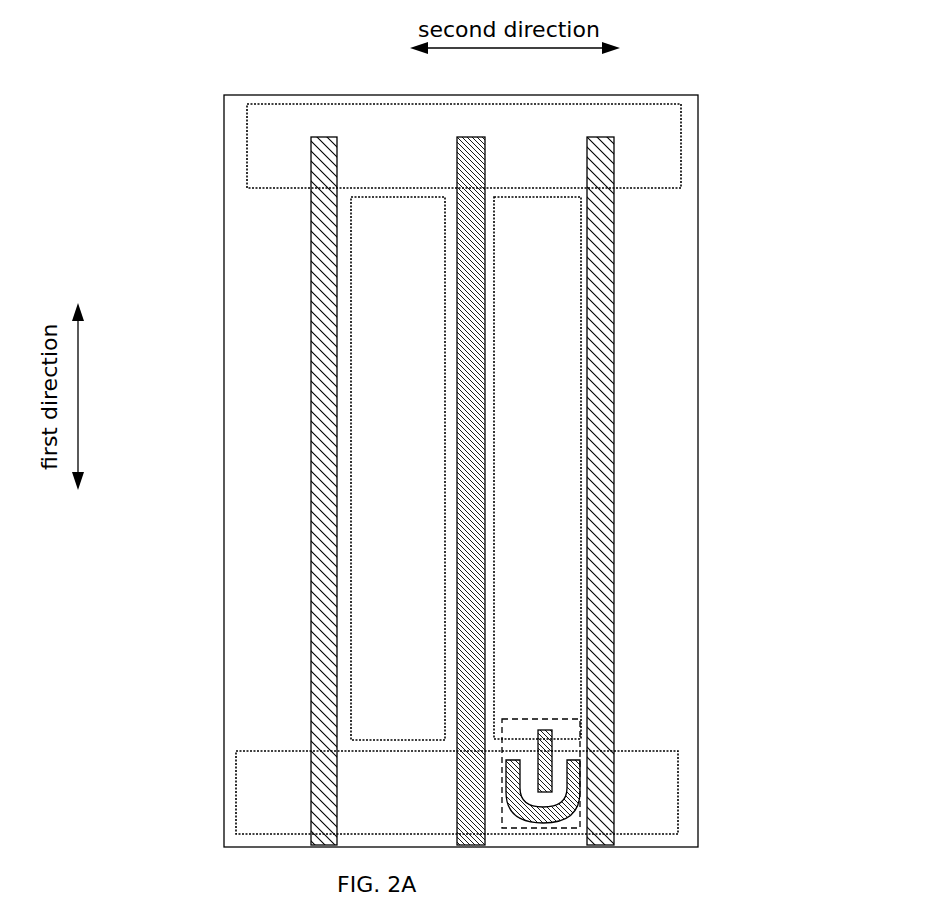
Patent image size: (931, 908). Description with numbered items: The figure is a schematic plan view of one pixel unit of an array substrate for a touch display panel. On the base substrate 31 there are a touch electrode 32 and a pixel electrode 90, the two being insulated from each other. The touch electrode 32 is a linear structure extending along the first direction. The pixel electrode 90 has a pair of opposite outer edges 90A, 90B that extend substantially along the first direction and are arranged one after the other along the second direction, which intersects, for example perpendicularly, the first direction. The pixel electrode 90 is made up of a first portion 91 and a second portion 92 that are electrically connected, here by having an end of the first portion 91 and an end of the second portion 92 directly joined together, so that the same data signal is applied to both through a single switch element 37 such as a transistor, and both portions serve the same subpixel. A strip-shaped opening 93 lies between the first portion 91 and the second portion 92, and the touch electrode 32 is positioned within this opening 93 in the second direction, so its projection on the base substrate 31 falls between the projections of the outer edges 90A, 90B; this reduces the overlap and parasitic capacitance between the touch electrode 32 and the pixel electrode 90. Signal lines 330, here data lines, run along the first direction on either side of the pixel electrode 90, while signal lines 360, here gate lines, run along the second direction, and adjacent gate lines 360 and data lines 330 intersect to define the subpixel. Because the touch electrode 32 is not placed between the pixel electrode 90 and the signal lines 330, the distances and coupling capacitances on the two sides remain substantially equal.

The base substrate 31 is at (223, 317).
The touch electrode 32 is at (470, 312).
The switch element 37 is at (553, 718).
The pixel electrode 90 is at (522, 235).
The outer edge 90A is at (352, 418).
The outer edge 90B is at (582, 473).
The first portion 91 is at (400, 280).
The second portion 92 is at (538, 280).
The opening 93 is at (452, 468).
The signal lines 330 is at (322, 392).
The signal lines 360 is at (283, 162).